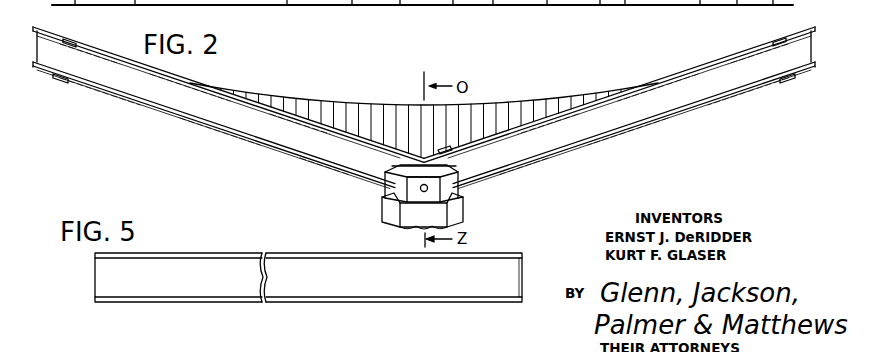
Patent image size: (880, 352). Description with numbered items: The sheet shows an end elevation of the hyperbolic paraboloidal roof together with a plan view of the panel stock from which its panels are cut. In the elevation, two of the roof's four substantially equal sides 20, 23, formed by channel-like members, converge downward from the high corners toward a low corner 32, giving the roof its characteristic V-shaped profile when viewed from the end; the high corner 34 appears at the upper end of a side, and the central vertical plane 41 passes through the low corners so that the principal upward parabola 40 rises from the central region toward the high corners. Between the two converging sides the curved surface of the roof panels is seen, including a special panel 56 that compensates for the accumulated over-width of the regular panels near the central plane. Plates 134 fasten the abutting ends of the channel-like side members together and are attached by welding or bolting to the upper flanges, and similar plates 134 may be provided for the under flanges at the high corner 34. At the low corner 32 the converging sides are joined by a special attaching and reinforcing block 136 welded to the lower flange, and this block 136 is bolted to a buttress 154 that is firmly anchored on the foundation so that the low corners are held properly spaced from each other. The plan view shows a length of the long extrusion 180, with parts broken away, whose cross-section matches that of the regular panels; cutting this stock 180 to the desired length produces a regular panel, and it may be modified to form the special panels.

In FIG. 2, the side 20 is at (660, 99).
In FIG. 2, the side 23 is at (164, 100).
In FIG. 2, the low corner 32 is at (388, 10).
In FIG. 2, the high corner 34 is at (40, 26).
In FIG. 2, the principal upward parabola 40 is at (292, 96).
In FIG. 2, the central vertical plane 41 is at (424, 118).
In FIG. 2, the special panel 56 is at (378, 114).
In FIG. 2, the plate 134 is at (68, 40).
In FIG. 2, the reinforcing block 136 is at (398, 183).
In FIG. 2, the buttress 154 is at (392, 212).
In FIG. 5, the extrusion 180 is at (196, 264).